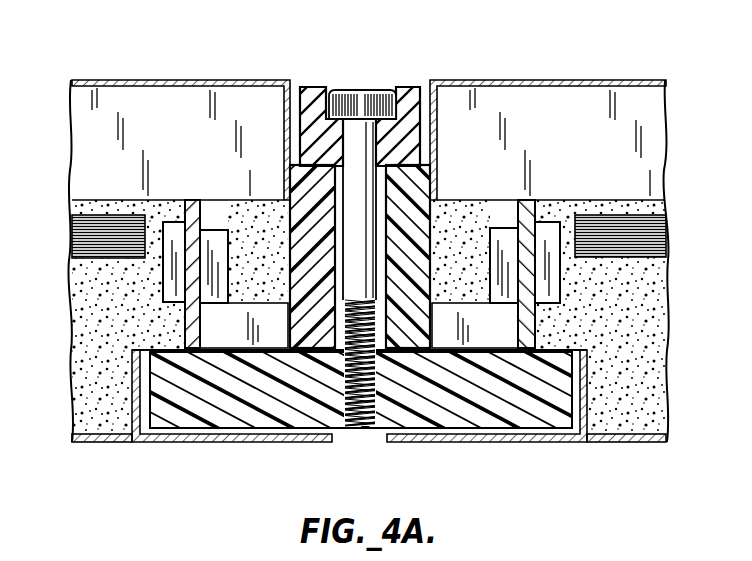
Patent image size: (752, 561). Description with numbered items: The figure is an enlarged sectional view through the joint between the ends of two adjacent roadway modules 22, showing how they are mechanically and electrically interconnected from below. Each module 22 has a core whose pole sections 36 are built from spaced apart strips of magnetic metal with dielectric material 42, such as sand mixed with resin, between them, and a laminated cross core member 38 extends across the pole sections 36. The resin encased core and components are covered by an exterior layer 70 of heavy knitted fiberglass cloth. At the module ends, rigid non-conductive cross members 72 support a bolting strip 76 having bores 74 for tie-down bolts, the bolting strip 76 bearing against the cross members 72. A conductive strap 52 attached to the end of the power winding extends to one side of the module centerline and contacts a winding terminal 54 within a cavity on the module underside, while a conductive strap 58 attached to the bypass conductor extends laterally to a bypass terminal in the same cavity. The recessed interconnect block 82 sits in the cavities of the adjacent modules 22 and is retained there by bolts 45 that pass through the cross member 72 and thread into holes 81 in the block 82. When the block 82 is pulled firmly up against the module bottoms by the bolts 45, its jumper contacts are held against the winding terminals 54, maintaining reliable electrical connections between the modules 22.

The module 22 is at (184, 72).
The pole section 36 is at (371, 142).
The cross core member 38 is at (76, 230).
The dielectric material 42 is at (112, 333).
The bolt 45 is at (357, 102).
The conductive strap 52 is at (508, 240).
The winding terminal 54 is at (443, 313).
The conductive strap 58 is at (548, 230).
The exterior layer 70 is at (134, 78).
The cross member 72 is at (286, 198).
The bore 74 is at (346, 146).
The bolting strip 76 is at (398, 138).
The hole 81 is at (365, 430).
The interconnect block 82 is at (216, 412).